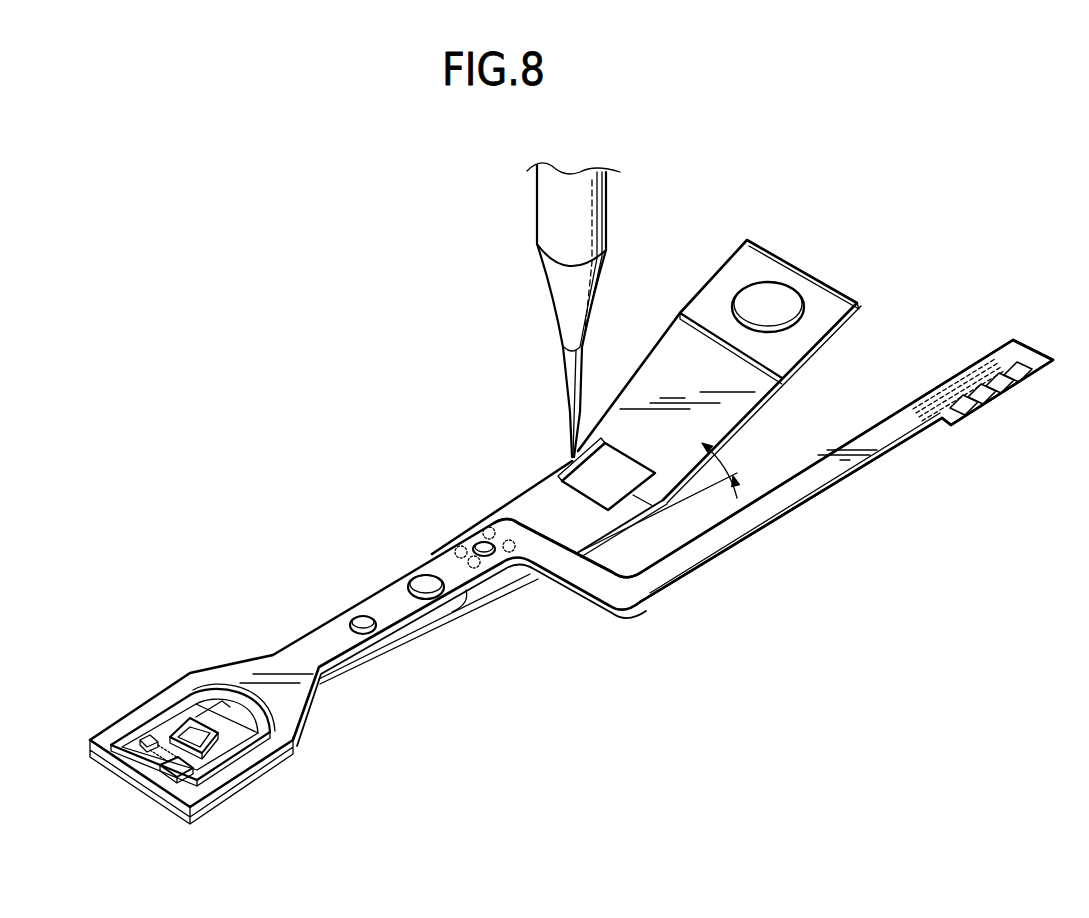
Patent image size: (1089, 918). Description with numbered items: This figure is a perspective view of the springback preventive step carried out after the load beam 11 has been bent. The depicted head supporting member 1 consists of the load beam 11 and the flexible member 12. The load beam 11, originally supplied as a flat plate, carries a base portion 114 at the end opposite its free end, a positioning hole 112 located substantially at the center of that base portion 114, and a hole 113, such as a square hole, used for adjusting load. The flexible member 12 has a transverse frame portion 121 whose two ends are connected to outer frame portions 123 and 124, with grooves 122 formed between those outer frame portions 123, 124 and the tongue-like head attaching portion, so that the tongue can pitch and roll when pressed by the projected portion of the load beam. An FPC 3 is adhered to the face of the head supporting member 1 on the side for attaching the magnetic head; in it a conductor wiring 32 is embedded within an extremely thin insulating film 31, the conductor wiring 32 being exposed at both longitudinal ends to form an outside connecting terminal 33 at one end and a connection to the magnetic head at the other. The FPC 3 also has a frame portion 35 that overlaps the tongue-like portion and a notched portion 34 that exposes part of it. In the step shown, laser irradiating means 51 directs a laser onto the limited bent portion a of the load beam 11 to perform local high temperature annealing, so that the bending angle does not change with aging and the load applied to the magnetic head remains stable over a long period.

The head supporting member 1 is at (463, 513).
The load beam 11 is at (507, 510).
The flexible member 12 is at (400, 580).
The positioning hole 112 is at (776, 298).
The hole 113 is at (562, 479).
The base portion 114 is at (832, 297).
The transverse frame portion 121 is at (118, 768).
The grooves 122 is at (207, 703).
The outer frame portion 123 is at (116, 732).
The outer frame portion 124 is at (275, 760).
The FPC 3 is at (740, 566).
The insulating film 31 is at (823, 497).
The conductor wiring 32 is at (948, 387).
The outside connecting terminal 33 is at (1005, 352).
The notched portion 34 is at (203, 752).
The frame portion 35 is at (225, 765).
The laser irradiating means 51 is at (612, 200).
The bent portion a is at (641, 496).